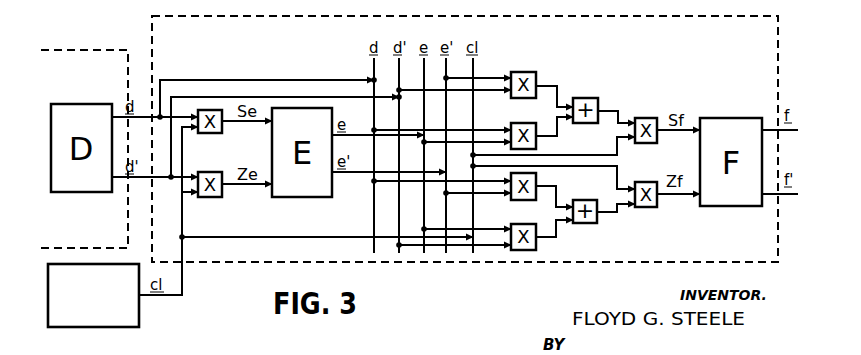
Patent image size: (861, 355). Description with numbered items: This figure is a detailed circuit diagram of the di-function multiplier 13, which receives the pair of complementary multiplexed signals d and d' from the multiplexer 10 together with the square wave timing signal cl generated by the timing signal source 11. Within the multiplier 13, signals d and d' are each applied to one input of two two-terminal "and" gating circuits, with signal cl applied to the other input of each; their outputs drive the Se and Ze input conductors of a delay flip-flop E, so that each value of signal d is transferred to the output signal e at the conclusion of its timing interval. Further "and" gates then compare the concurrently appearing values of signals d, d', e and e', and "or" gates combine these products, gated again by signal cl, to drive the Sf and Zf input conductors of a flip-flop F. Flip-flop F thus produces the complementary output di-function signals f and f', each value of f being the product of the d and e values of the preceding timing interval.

The multiplexer 10 is at (92, 50).
The di-function multiplier 13 is at (152, 25).
The timing signal source 11 is at (91, 328).